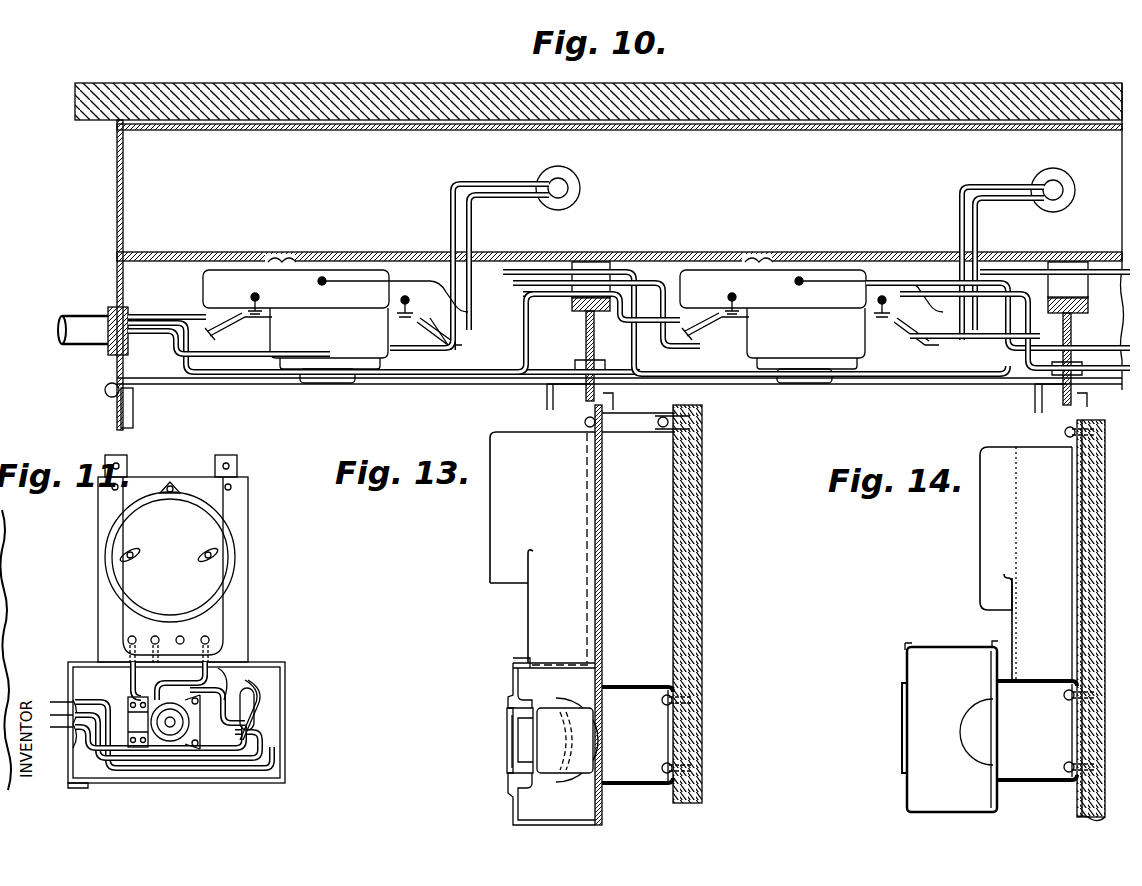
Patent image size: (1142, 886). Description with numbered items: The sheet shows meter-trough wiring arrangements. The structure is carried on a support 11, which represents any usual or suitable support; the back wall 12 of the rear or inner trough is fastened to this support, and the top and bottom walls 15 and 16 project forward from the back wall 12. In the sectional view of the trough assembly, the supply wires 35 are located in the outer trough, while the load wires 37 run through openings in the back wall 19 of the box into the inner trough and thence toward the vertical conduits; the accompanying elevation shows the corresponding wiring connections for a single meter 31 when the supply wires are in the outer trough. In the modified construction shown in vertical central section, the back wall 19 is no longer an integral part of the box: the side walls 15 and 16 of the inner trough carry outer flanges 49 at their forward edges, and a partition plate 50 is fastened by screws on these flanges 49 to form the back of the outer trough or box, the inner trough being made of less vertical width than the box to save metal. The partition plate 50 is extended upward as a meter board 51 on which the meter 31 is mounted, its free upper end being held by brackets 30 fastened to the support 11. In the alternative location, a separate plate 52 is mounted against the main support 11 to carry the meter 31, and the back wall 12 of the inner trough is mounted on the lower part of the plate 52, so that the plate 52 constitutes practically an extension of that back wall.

In FIG. 14, the support 11 is at (1088, 462).
In FIG. 13, the back wall 12 is at (670, 745).
In FIG. 14, the back wall 12 is at (1068, 742).
In FIG. 13, the top wall 15 is at (634, 786).
In FIG. 14, the top wall 15 is at (1022, 778).
In FIG. 13, the bottom wall 16 is at (622, 686).
In FIG. 14, the bottom wall 16 is at (1030, 682).
In FIG. 10, the back wall of the box 19 is at (345, 252).
In FIG. 11, the back wall of the box 19 is at (90, 672).
In FIG. 13, the brackets 30 is at (640, 436).
In FIG. 13, the meter 31 is at (542, 547).
In FIG. 14, the meter 31 is at (1026, 528).
In FIG. 11, the supply wires 35 is at (172, 780).
In FIG. 10, the load wires 37 is at (450, 214).
In FIG. 11, the load wires 37 is at (248, 668).
In FIG. 13, the outer flanges 49 is at (603, 660).
In FIG. 14, the outer flanges 49 is at (998, 657).
In FIG. 13, the partition plate 50 is at (600, 725).
In FIG. 14, the partition plate 50 is at (995, 730).
In FIG. 13, the meter board 51 is at (597, 536).
In FIG. 14, the separate plate 52 is at (1072, 560).